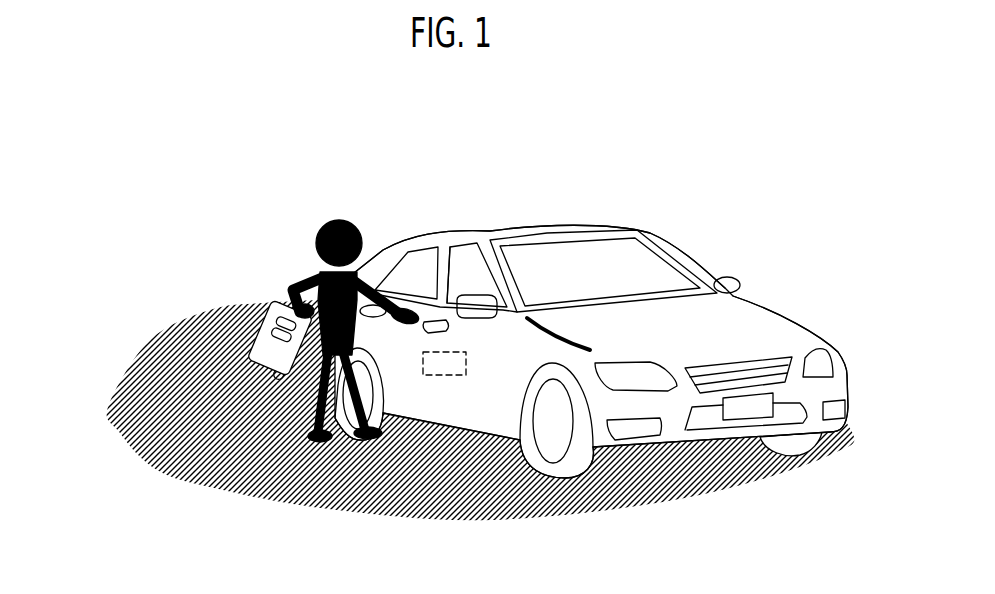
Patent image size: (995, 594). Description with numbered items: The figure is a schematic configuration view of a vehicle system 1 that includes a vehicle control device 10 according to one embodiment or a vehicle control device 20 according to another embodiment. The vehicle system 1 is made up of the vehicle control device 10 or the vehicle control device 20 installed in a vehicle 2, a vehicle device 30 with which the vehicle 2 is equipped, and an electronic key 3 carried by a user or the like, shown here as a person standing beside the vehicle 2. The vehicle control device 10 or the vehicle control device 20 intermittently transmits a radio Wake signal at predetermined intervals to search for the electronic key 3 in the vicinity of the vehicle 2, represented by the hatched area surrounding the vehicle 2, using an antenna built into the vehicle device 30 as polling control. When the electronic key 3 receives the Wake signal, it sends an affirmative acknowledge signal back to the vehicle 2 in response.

The vehicle system 1 is at (837, 183).
The vehicle 2 is at (580, 222).
The electronic key 3 is at (260, 328).
The vehicle control device 10 is at (484, 459).
The vehicle control device 20 is at (447, 376).
The vehicle device 30 is at (442, 318).